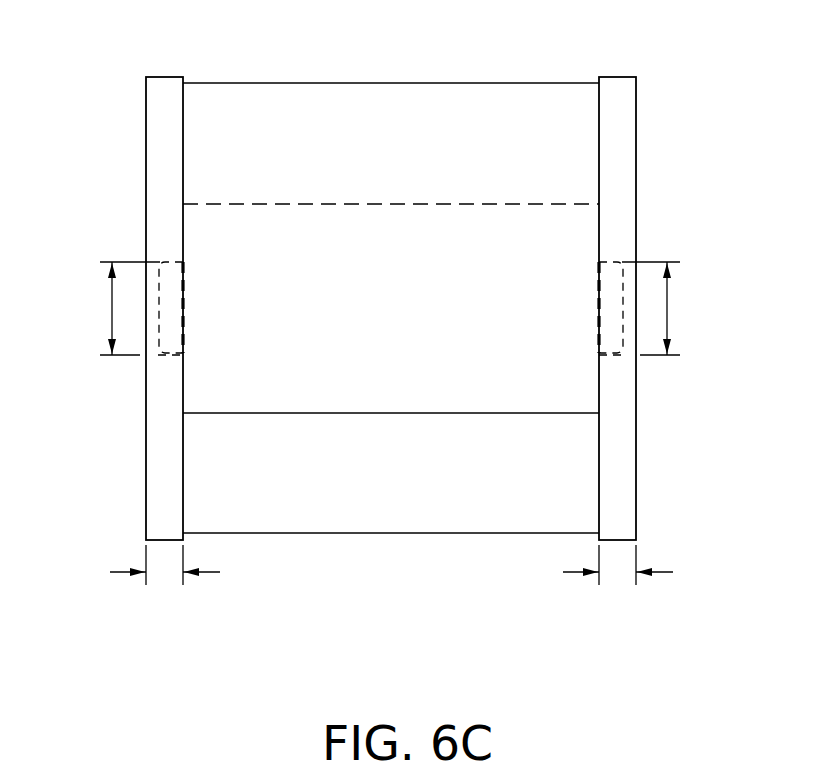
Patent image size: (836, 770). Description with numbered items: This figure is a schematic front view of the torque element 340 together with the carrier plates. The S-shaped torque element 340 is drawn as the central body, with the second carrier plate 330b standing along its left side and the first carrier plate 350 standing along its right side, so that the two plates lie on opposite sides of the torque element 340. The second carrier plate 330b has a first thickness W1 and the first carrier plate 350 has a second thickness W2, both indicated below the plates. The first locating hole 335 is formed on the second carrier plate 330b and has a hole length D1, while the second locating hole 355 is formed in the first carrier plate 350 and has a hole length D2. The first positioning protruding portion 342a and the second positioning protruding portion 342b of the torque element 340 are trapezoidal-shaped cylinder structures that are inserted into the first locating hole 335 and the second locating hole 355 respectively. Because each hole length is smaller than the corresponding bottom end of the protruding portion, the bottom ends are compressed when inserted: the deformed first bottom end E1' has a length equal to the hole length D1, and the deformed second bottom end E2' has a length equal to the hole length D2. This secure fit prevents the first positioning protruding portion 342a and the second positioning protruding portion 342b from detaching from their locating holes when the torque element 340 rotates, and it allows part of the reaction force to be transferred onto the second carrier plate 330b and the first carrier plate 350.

The second carrier plate 330b is at (164, 92).
The torque element 340 is at (337, 105).
The first carrier plate 350 is at (617, 92).
The first locating hole 335 is at (154, 259).
The second locating hole 355 is at (629, 259).
The first positioning protruding portion 342a is at (175, 332).
The second positioning protruding portion 342b is at (608, 332).
The deformed first bottom end E1' is at (220, 316).
The deformed second bottom end E2' is at (562, 313).
The hole length of the first locating hole D1 is at (118, 308).
The hole length of the second locating hole D2 is at (661, 308).
The first thickness W1 is at (165, 581).
The second thickness W2 is at (618, 581).